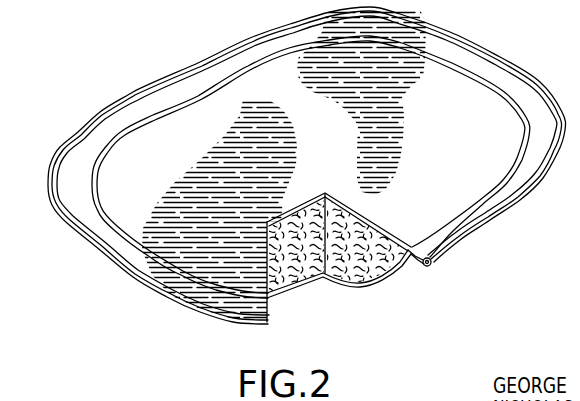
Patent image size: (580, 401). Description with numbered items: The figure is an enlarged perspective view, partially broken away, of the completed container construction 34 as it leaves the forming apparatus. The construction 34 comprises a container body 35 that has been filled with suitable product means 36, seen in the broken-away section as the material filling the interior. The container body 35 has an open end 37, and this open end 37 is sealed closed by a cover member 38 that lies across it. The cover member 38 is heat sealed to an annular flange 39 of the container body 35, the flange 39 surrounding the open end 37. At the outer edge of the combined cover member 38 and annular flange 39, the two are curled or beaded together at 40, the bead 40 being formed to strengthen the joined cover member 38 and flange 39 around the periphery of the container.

The completed container construction 34 is at (123, 82).
The container body 35 is at (375, 282).
The product means 36 is at (293, 268).
The open end 37 is at (382, 235).
The cover member 38 is at (498, 117).
The annular flange 39 is at (410, 262).
The curled or beaded edge 40 is at (438, 256).